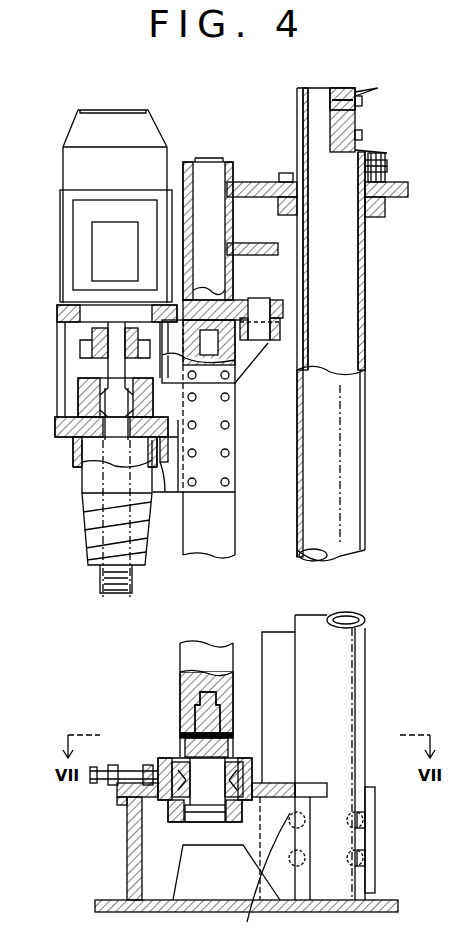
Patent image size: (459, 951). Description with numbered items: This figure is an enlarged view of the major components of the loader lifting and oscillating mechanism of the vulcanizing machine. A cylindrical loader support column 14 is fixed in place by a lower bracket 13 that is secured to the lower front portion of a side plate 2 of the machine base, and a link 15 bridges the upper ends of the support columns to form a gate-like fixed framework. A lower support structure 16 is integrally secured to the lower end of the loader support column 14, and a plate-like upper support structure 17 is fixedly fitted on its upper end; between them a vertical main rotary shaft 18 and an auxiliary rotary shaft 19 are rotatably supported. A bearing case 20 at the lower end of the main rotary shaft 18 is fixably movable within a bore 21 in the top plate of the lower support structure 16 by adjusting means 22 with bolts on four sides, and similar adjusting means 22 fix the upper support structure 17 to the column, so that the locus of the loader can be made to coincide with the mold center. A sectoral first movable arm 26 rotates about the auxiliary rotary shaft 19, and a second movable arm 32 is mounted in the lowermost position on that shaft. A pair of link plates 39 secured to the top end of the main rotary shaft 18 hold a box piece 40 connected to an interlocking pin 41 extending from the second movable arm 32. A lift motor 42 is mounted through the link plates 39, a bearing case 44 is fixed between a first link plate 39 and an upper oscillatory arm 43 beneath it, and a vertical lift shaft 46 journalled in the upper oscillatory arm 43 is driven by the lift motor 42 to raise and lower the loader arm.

The side plate 2 is at (262, 645).
The lower bracket 13 is at (375, 847).
The loader support column 14 is at (358, 476).
The link 15 is at (360, 88).
The lower support structure 16 is at (127, 878).
The upper support structure 17 is at (262, 182).
The main rotary shaft 18 is at (235, 512).
The auxiliary rotary shaft 19 is at (209, 165).
The bearing case 20 is at (170, 760).
The bore 21 is at (158, 803).
The adjusting means 22 is at (372, 152).
The first movable arm 26 is at (258, 243).
The second movable arm 32 is at (280, 300).
The link plate 39 is at (235, 362).
The box piece 40 is at (331, 231).
The interlocking pin 41 is at (262, 303).
The lift motor 42 is at (134, 265).
The upper oscillatory arm 43 is at (178, 492).
The bearing case 44 is at (92, 383).
The vertical lift shaft 46 is at (113, 592).